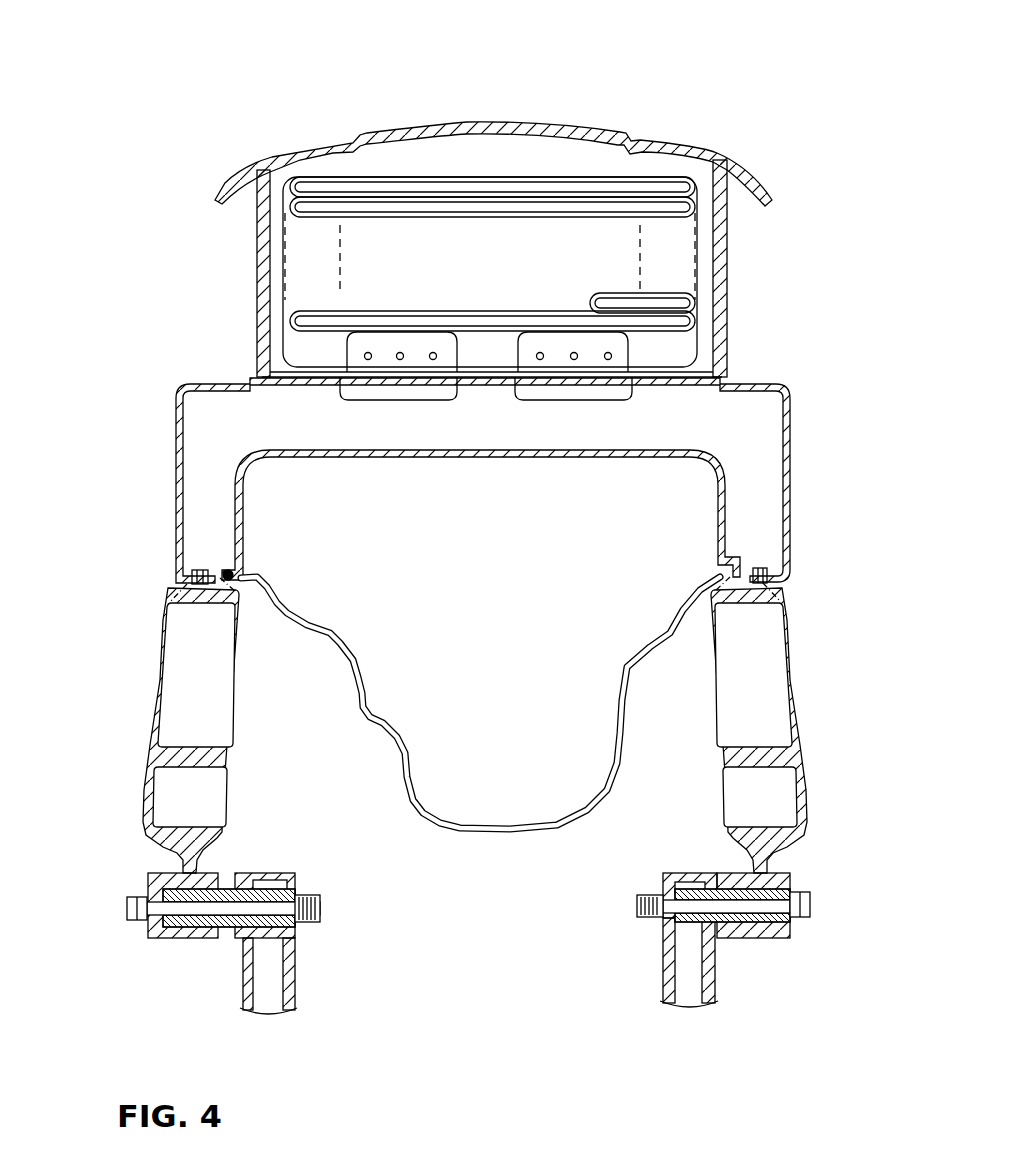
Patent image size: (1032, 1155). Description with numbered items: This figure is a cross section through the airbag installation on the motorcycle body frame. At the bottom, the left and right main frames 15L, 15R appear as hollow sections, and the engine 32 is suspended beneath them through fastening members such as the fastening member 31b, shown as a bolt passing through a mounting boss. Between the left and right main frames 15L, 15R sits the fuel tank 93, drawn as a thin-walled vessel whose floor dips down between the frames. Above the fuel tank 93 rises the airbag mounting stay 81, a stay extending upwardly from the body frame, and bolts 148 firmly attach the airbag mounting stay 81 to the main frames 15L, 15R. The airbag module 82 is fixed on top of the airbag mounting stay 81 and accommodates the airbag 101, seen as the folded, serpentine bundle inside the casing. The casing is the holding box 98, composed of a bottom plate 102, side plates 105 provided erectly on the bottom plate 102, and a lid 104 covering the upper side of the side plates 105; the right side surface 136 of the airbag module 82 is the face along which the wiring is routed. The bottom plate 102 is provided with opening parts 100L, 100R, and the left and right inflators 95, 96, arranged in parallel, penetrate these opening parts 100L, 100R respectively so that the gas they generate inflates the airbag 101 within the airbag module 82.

The lid 104 is at (470, 124).
The holding box 98 is at (586, 111).
The airbag module 82 is at (645, 111).
The airbag 101 is at (700, 205).
The side plates 105 is at (722, 245).
The right side surface 136 is at (725, 283).
The airbag mounting stay 81 is at (790, 418).
The fuel tank 93 is at (751, 496).
The bolts 148 is at (200, 570).
The bottom plate 102 is at (333, 384).
The left inflator 95 is at (378, 384).
The left opening part 100L is at (447, 384).
The right opening part 100R is at (535, 386).
The right inflator 96 is at (578, 386).
The left main frame 15L is at (137, 828).
The right main frame 15R is at (798, 822).
The fastening member 31b is at (332, 913).
The engine 32 is at (657, 968).